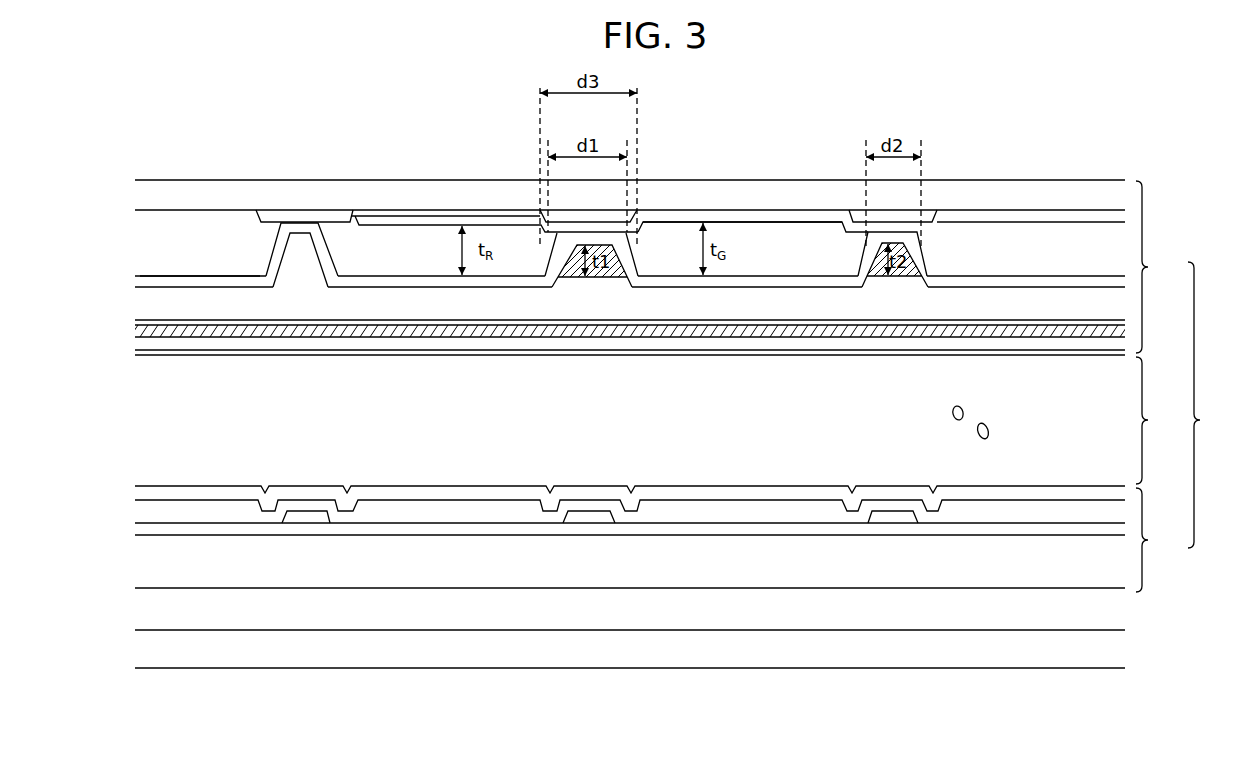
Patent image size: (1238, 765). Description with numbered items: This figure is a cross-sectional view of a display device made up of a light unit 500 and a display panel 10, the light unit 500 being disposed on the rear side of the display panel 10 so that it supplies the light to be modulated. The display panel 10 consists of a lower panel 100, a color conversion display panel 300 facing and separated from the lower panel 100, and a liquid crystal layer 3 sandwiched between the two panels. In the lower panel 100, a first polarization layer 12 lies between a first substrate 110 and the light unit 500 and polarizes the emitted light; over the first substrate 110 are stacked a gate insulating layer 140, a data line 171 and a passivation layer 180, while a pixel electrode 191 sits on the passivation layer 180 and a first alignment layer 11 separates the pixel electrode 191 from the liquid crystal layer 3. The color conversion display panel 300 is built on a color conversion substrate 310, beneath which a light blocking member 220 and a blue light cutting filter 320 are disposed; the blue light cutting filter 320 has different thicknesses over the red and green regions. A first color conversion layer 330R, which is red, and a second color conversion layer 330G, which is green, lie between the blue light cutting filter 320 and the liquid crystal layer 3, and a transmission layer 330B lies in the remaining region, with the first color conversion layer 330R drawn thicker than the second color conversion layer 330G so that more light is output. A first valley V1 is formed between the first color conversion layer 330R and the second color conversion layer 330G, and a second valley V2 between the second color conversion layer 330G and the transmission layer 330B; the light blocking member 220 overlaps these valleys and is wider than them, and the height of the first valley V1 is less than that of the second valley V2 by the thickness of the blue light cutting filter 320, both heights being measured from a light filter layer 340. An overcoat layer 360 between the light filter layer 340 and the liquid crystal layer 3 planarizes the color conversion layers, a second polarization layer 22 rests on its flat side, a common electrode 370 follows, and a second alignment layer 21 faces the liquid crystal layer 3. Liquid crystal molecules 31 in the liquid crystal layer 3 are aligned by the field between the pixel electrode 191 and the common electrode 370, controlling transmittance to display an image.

The display panel 10 is at (1204, 405).
The lower panel 100 is at (1160, 540).
The color conversion display panel 300 is at (1160, 267).
The liquid crystal layer 3 is at (1148, 420).
The liquid crystal molecules 31 is at (992, 428).
The light unit 500 is at (1040, 650).
The first polarization layer 12 is at (990, 596).
The first substrate 110 is at (912, 560).
The gate insulating layer 140 is at (840, 528).
The data line 171 is at (588, 518).
The passivation layer 180 is at (507, 518).
The pixel electrode 191 is at (388, 505).
The first alignment layer 11 is at (705, 491).
The second alignment layer 21 is at (150, 355).
The common electrode 370 is at (150, 337).
The second polarization layer 22 is at (150, 323).
The light filter layer 340 is at (245, 283).
The overcoat layer 360 is at (297, 270).
The light blocking member 220 is at (288, 212).
The color conversion substrate 310 is at (467, 187).
The blue light cutting filter 320 is at (797, 217).
The first color conversion layer 330R is at (421, 253).
The second color conversion layer 330G is at (742, 253).
The transmission layer 330B is at (174, 255).
The first valley V1 is at (573, 250).
The second valley V2 is at (907, 237).